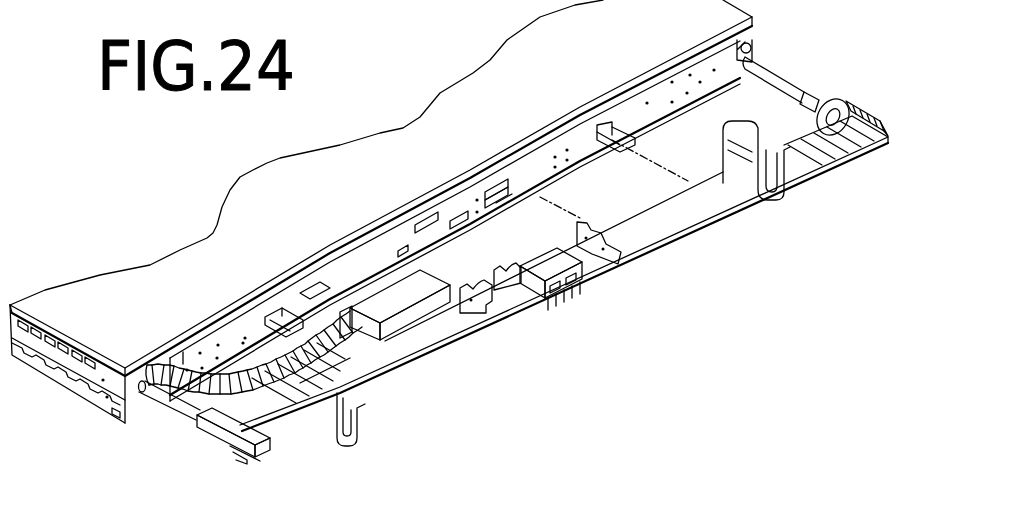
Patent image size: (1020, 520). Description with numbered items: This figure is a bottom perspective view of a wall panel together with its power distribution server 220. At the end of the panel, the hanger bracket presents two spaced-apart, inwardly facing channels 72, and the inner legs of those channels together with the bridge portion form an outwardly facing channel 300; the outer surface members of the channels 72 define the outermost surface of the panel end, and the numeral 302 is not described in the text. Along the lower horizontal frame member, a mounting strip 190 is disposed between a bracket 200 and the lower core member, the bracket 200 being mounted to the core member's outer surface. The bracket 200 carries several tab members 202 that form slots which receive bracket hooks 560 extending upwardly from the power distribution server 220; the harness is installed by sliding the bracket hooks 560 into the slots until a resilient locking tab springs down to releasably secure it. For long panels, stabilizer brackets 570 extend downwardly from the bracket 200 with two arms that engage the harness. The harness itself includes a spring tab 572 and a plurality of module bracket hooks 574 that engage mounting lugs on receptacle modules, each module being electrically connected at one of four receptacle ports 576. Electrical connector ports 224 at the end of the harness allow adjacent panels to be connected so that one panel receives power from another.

The inwardly facing channel 72 is at (63, 380).
The mounting strip 190 is at (312, 310).
The bracket 200 is at (530, 187).
The tab member 202 is at (492, 186).
The power distribution server 220 is at (690, 228).
The electrical connector port 224 is at (843, 143).
The outwardly facing channel 300 is at (52, 360).
The bottom member 302 is at (108, 407).
The bracket hook 560 is at (577, 222).
The stabilizer bracket 570 is at (267, 320).
The spring tab 572 is at (505, 182).
The module bracket hook 574 is at (597, 262).
The receptacle port 576 is at (573, 275).